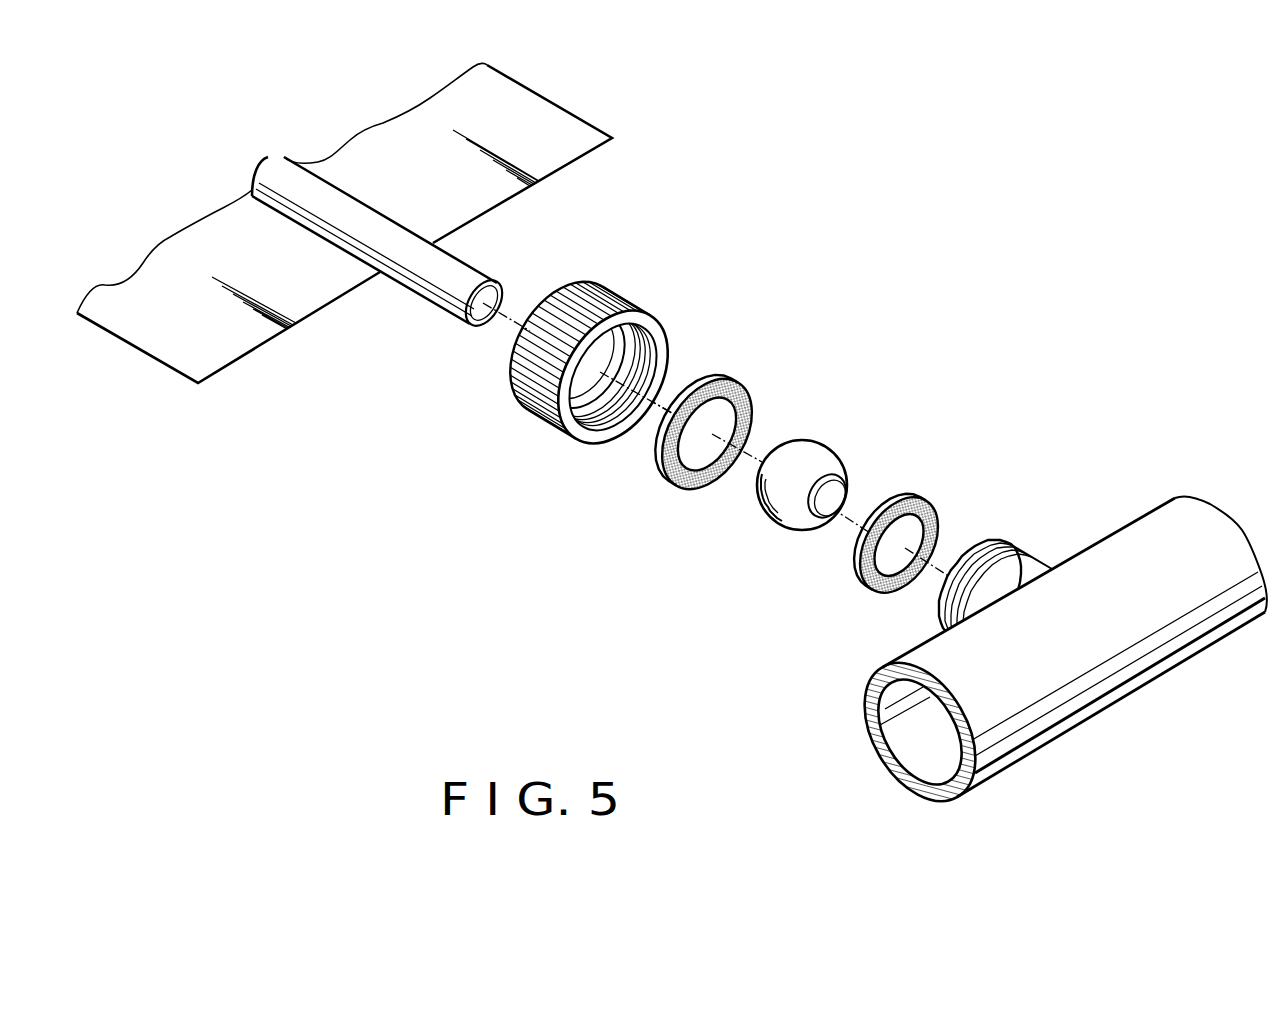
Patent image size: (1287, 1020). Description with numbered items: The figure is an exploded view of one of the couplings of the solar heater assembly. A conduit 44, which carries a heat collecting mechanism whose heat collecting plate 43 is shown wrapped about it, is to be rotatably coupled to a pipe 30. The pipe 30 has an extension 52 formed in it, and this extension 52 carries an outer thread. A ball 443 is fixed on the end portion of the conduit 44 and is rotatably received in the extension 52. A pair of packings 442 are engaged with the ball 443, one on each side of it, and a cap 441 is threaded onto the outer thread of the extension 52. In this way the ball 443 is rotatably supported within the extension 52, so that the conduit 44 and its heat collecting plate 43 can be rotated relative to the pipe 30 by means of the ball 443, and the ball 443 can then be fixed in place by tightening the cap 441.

The pipe 30 is at (1157, 548).
The heat collecting plate 43 is at (538, 133).
The conduit 44 is at (448, 268).
The cap 441 is at (648, 320).
The packing 442 is at (742, 387).
The ball 443 is at (807, 460).
The extension 52 is at (1043, 565).